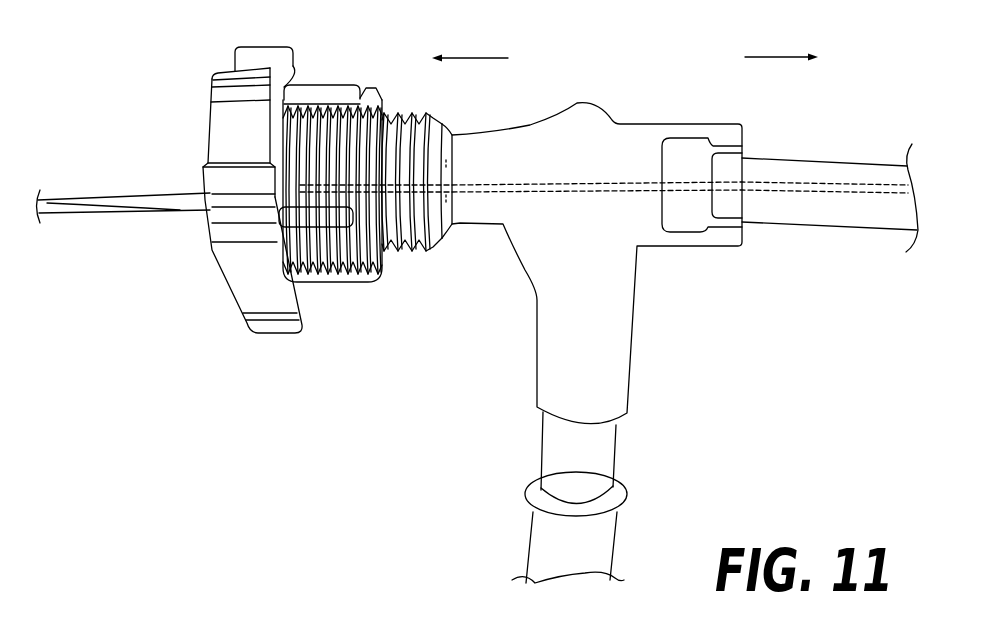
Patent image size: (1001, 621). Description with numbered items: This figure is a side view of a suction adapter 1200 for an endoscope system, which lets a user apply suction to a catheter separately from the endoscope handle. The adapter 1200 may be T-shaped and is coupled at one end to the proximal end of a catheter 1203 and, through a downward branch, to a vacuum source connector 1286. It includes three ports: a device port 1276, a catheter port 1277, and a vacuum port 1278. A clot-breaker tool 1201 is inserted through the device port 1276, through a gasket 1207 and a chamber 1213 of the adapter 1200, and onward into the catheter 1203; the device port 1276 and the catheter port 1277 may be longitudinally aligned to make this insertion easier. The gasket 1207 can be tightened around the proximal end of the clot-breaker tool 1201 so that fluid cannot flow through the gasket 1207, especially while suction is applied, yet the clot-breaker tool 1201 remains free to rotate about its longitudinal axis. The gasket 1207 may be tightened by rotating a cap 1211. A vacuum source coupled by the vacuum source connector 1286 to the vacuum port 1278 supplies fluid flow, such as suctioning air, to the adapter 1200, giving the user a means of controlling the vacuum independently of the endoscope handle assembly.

The adapter 1200 is at (672, 70).
The clot-breaker tool 1201 is at (167, 202).
The catheter 1203 is at (832, 210).
The gasket 1207 is at (450, 242).
The cap 1211 is at (268, 303).
The chamber 1213 is at (608, 233).
The device port 1276 is at (206, 265).
The catheter port 1277 is at (745, 235).
The vacuum port 1278 is at (628, 433).
The vacuum source connector 1286 is at (603, 542).